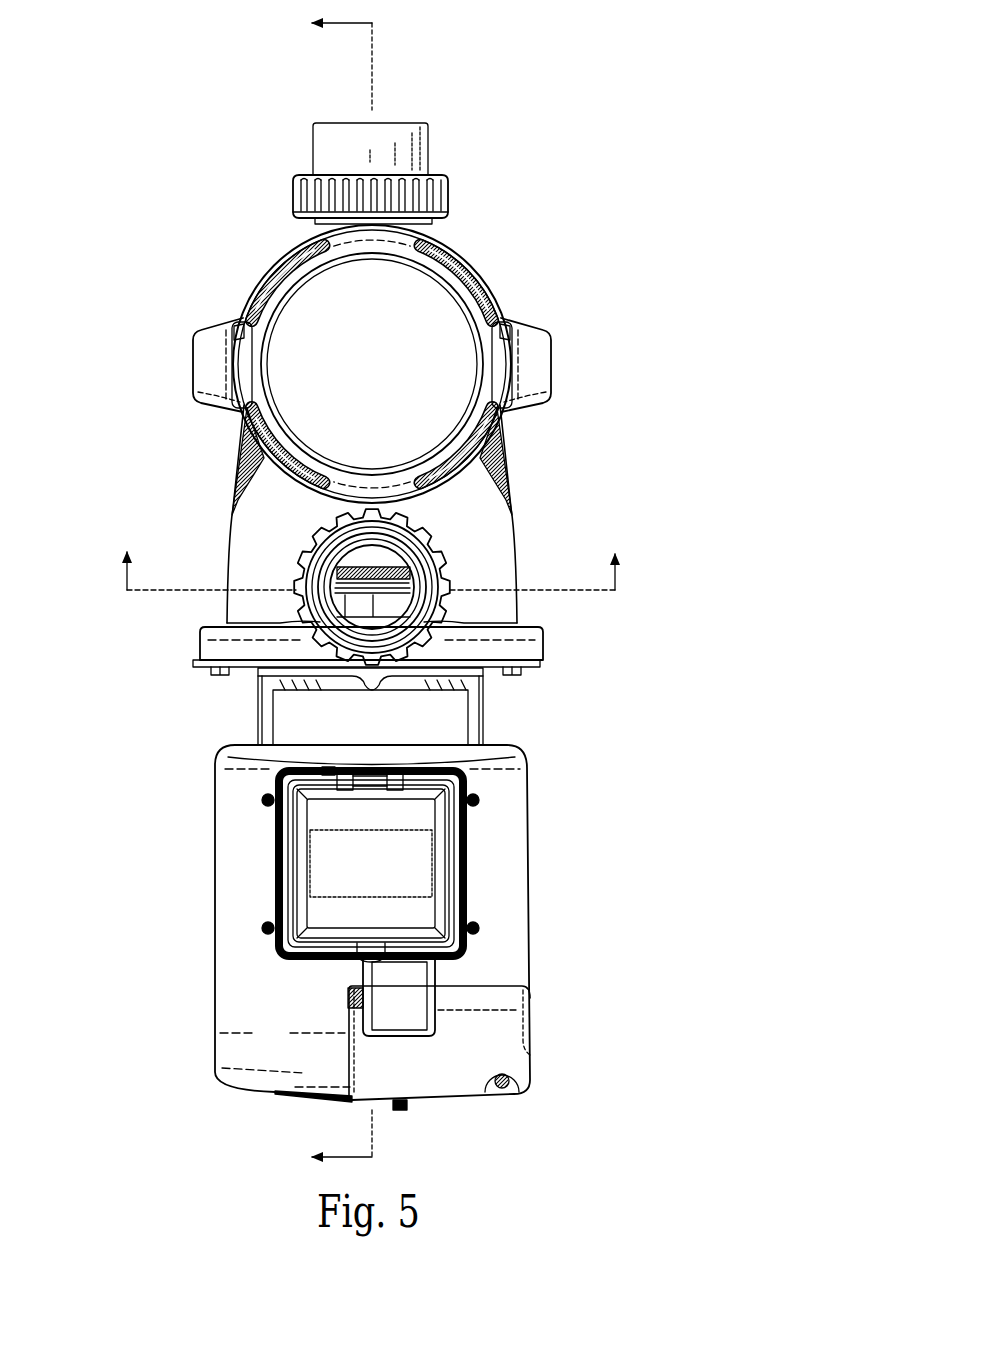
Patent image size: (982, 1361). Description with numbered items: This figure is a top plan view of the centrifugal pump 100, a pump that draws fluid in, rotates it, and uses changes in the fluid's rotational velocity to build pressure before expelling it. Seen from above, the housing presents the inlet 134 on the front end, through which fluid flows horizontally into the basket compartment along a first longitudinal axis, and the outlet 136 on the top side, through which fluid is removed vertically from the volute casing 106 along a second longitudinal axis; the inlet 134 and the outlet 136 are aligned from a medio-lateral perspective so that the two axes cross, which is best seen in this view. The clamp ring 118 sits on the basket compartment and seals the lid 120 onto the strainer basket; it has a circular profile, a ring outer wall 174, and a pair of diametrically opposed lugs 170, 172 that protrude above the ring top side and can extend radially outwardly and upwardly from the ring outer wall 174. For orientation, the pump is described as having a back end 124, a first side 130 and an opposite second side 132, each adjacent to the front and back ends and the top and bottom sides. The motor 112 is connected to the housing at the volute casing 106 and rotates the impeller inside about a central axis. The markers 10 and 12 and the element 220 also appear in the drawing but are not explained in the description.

The centrifugal pump 100 is at (601, 126).
The section line 10 is at (322, 591).
The section line 12 is at (372, 558).
The inlet 134 is at (339, 114).
The clamp ring 118 is at (513, 428).
The ring outer wall 174 is at (462, 242).
The lid 120 is at (435, 325).
The lug 172 is at (216, 318).
The lug 170 is at (541, 353).
The first side 130 is at (703, 385).
The second side 132 is at (210, 503).
The outlet 136 is at (444, 559).
The volute casing 106 is at (228, 606).
The back end 124 is at (210, 692).
The controller housing 220 is at (520, 878).
The motor 112 is at (548, 1057).